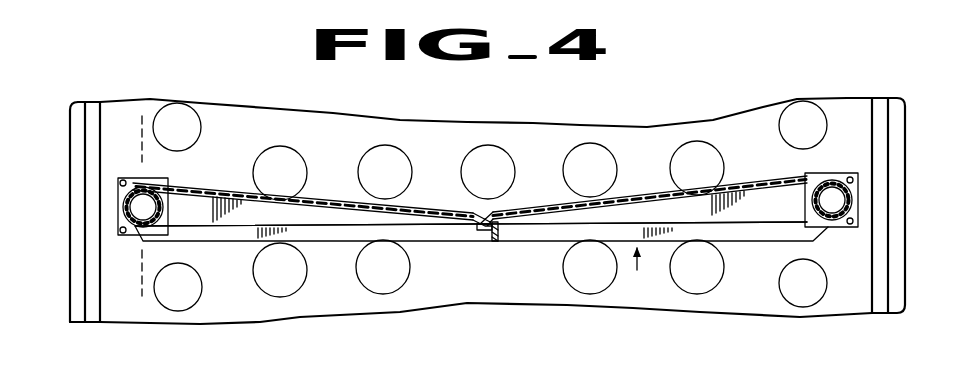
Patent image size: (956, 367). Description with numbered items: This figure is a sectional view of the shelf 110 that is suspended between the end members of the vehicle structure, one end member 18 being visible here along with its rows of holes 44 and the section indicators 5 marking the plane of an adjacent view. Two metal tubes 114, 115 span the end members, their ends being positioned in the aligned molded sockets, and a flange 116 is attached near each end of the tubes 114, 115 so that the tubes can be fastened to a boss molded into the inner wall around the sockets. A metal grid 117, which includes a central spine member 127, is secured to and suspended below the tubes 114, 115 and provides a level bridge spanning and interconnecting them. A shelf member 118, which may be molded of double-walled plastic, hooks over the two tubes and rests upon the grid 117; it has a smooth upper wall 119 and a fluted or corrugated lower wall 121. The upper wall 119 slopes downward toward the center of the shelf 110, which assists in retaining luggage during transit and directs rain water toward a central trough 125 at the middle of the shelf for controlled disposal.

The section line 5- 5 is at (138, 126).
The end member 18 is at (531, 129).
The holes 44 is at (277, 151).
The shelf 110 is at (641, 277).
The metal tube 114 is at (163, 213).
The metal tube 115 is at (816, 238).
The flange 116 is at (167, 180).
The metal grid 117 is at (447, 236).
The shelf member 118 is at (329, 194).
The upper wall 119 is at (423, 200).
The lower wall 121 is at (335, 218).
The central trough 125 is at (505, 209).
The central spine member 127 is at (513, 243).